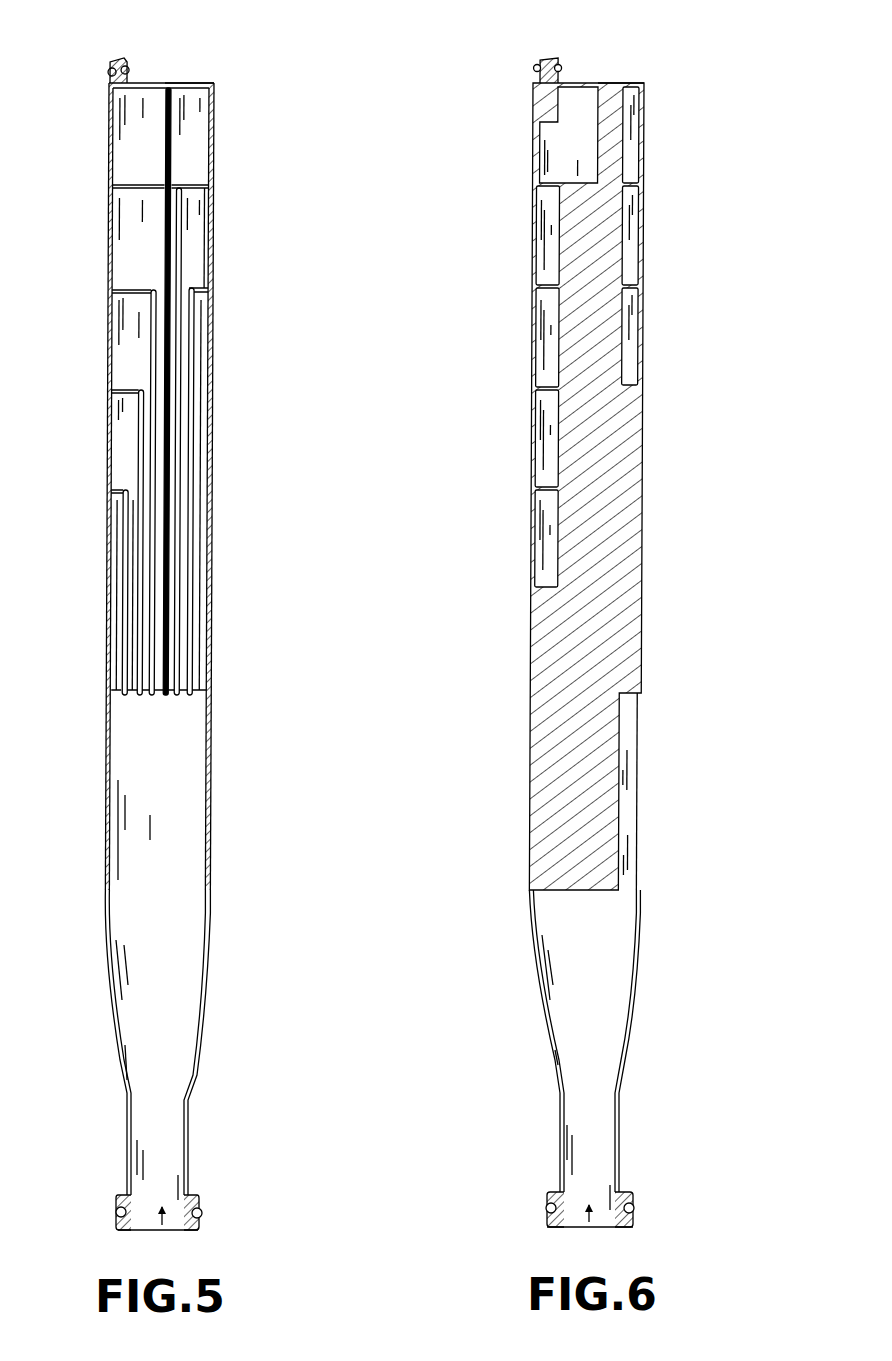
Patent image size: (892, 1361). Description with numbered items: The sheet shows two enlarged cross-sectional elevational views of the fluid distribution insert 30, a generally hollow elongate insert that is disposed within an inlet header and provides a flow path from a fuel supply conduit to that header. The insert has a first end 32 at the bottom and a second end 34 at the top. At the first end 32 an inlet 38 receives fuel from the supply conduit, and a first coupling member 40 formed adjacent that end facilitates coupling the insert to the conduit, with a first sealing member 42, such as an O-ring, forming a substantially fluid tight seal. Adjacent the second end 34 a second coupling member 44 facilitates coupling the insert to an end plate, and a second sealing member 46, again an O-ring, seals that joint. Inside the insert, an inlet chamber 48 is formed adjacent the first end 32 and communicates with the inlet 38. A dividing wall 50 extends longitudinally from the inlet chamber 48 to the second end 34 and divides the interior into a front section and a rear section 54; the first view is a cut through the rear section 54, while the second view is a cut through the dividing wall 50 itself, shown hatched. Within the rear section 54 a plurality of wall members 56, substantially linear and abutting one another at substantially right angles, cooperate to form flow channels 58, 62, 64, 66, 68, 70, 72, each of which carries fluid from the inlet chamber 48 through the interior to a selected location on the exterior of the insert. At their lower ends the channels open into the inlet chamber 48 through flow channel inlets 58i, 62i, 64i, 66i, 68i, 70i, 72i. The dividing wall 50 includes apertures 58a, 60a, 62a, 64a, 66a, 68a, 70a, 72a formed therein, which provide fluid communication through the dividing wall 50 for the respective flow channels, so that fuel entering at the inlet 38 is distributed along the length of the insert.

In FIG. 5, the fluid distribution insert 30 is at (243, 57).
In FIG. 6, the fluid distribution insert 30 is at (660, 57).
In FIG. 5, the first end 32 is at (190, 1152).
In FIG. 6, the first end 32 is at (622, 1150).
In FIG. 5, the second end 34 is at (198, 82).
In FIG. 6, the second end 34 is at (612, 82).
In FIG. 5, the inlet 38 is at (164, 1226).
In FIG. 6, the inlet 38 is at (592, 1224).
In FIG. 5, the first coupling member 40 is at (122, 1198).
In FIG. 6, the first coupling member 40 is at (551, 1194).
In FIG. 5, the first sealing member 42 is at (117, 1211).
In FIG. 6, the first sealing member 42 is at (548, 1208).
In FIG. 5, the second coupling member 44 is at (116, 60).
In FIG. 6, the second coupling member 44 is at (548, 58).
In FIG. 5, the second sealing member 46 is at (108, 72).
In FIG. 6, the second sealing member 46 is at (534, 68).
In FIG. 5, the inlet chamber 48 is at (170, 866).
In FIG. 6, the inlet chamber 48 is at (602, 1013).
In FIG. 6, the dividing wall 50 is at (606, 520).
In FIG. 5, the rear section 54 is at (106, 232).
In FIG. 5, the wall members 56 is at (127, 522).
In FIG. 5, the flow channel 58 is at (117, 640).
In FIG. 5, the flow channel inlet 58i is at (121, 681).
In FIG. 6, the aperture 58a is at (548, 531).
In FIG. 6, the aperture 60a is at (629, 791).
In FIG. 5, the flow channel 62 is at (133, 580).
In FIG. 5, the flow channel inlet 62i is at (133, 697).
In FIG. 6, the aperture 62a is at (548, 431).
In FIG. 5, the flow channel 64 is at (203, 386).
In FIG. 5, the flow channel inlet 64i is at (202, 681).
In FIG. 6, the aperture 64a is at (631, 341).
In FIG. 5, the flow channel 66 is at (148, 440).
In FIG. 5, the flow channel inlet 66i is at (148, 697).
In FIG. 6, the aperture 66a is at (548, 332).
In FIG. 5, the flow channel 68 is at (186, 356).
In FIG. 5, the flow channel inlet 68i is at (187, 697).
In FIG. 6, the aperture 68a is at (631, 241).
In FIG. 5, the flow channel 70 is at (162, 334).
In FIG. 5, the flow channel inlet 70i is at (162, 697).
In FIG. 6, the aperture 70a is at (548, 236).
In FIG. 5, the flow channel 72 is at (174, 322).
In FIG. 5, the flow channel inlet 72i is at (176, 697).
In FIG. 6, the aperture 72a is at (631, 141).